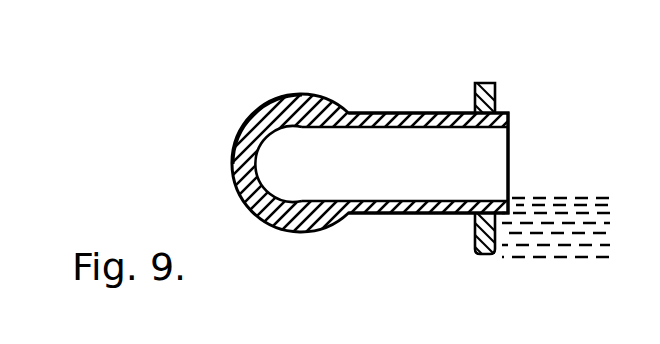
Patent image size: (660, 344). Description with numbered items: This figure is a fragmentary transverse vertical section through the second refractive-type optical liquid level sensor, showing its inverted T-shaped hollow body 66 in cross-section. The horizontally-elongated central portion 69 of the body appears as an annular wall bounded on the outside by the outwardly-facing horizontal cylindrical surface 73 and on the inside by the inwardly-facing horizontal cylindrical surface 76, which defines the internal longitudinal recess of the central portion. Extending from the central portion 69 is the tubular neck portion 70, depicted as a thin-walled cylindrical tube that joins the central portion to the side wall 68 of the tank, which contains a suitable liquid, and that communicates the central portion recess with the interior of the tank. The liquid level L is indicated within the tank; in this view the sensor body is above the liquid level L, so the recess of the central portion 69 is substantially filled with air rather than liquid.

The hollow body 66 is at (222, 187).
The central portion 69 is at (233, 154).
The outwardly-facing horizontal cylindrical surface 73 is at (246, 117).
The inwardly-facing horizontal cylindrical surface 76 is at (338, 152).
The tubular neck portion 70 is at (413, 113).
The side wall 68 is at (495, 92).
The liquid level L is at (564, 197).